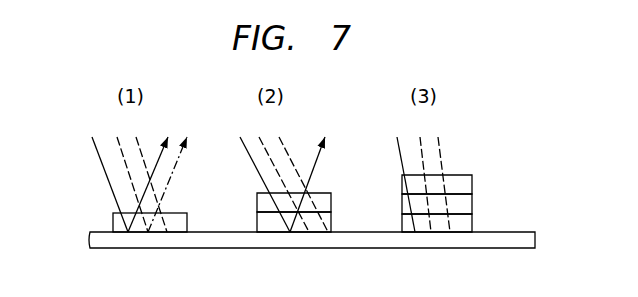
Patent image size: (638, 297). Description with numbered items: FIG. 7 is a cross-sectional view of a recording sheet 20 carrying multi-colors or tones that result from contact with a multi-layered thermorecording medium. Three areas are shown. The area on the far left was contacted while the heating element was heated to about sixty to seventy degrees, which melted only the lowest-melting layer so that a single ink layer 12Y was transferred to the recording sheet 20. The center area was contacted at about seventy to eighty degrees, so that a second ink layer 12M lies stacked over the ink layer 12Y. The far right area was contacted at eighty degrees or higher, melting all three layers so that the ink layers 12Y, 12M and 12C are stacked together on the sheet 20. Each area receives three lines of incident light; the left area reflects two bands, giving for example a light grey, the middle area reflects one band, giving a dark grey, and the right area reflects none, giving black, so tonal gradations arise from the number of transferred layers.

The yellow ink layer 12Y is at (180, 219).
The magenta ink layer 12M is at (320, 201).
The cyan ink layer 12C is at (465, 183).
The recording sheet 20 is at (535, 238).